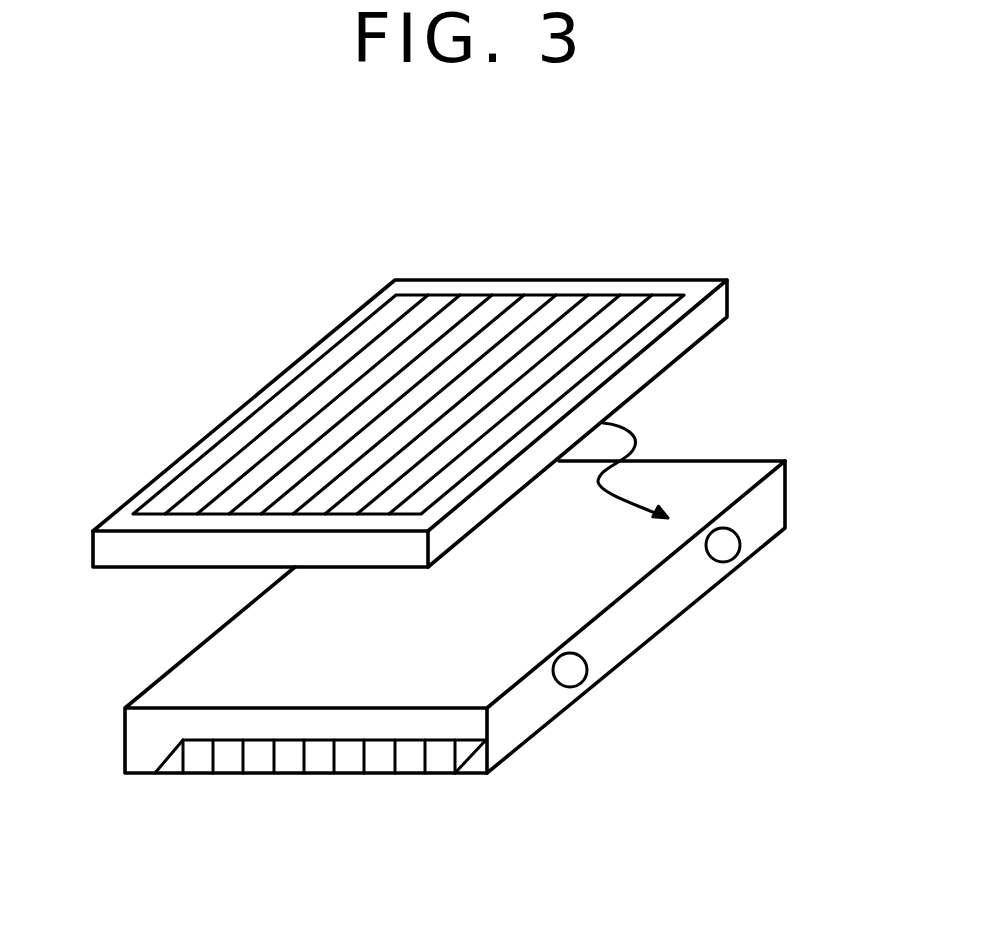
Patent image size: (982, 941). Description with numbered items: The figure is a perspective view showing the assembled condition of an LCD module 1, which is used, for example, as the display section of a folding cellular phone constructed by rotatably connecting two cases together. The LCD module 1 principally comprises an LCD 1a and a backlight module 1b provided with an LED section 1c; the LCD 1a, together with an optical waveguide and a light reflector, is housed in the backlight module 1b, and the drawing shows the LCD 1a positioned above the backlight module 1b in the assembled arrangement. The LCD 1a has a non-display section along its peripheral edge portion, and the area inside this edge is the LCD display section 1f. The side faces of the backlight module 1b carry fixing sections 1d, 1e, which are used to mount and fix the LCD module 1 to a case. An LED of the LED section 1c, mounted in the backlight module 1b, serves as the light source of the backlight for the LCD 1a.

The LCD module 1 is at (857, 523).
The LCD 1a is at (168, 467).
The backlight module 1b is at (142, 692).
The LED section 1c is at (318, 760).
The fixing section 1d is at (730, 562).
The fixing section 1e is at (576, 687).
The LCD display section 1f is at (476, 326).